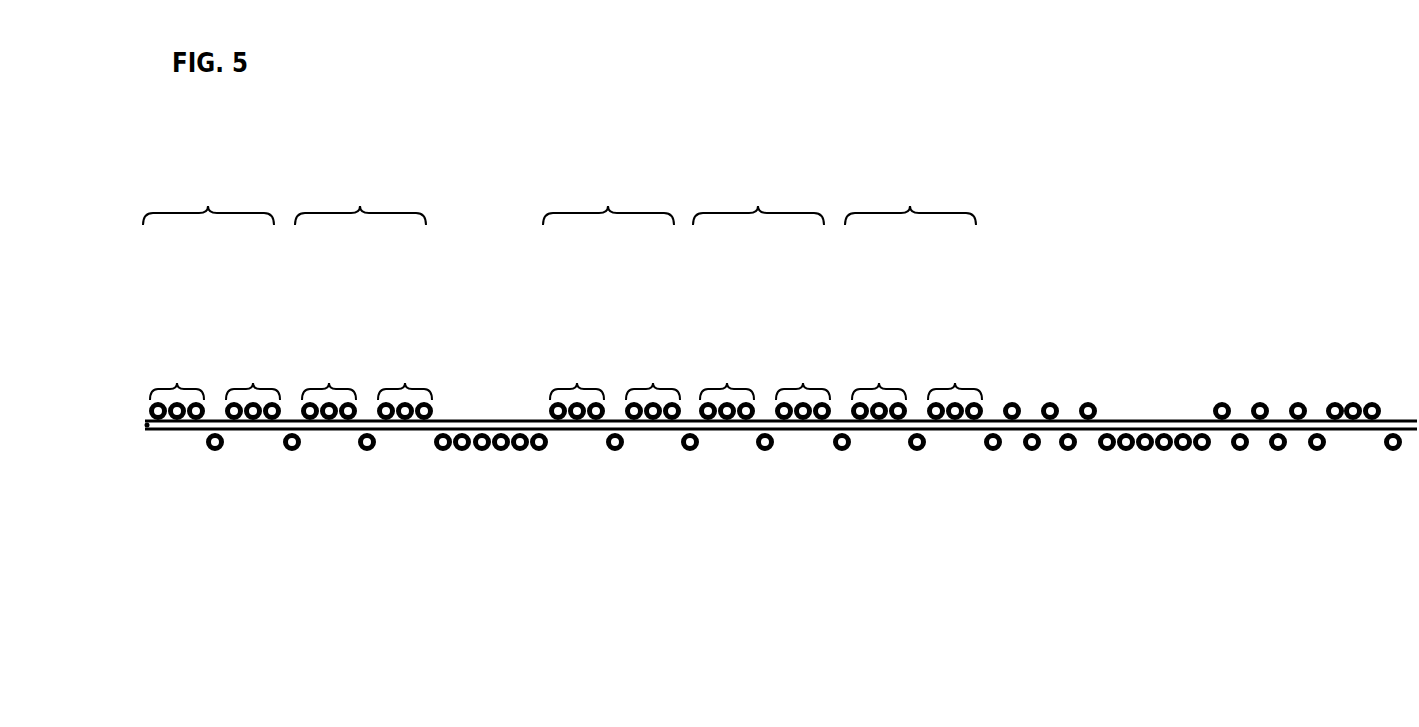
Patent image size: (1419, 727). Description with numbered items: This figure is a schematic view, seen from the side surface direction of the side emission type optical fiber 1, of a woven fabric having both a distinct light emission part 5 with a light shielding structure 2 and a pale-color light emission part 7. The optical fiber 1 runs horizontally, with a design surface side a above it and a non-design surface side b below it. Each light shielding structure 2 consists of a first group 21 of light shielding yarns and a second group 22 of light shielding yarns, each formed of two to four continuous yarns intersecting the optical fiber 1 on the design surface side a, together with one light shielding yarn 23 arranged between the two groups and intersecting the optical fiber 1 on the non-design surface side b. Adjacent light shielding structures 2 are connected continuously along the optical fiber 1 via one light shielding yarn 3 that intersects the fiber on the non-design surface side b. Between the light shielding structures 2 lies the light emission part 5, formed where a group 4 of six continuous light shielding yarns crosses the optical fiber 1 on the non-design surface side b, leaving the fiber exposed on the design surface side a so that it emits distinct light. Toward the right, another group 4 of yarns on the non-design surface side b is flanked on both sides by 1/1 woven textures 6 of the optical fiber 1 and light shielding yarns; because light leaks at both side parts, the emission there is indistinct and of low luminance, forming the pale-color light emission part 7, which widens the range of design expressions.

The side emission type optical fiber 1 is at (1360, 433).
The light shielding structure 2 is at (559, 192).
The first group of light shielding yarns 21 is at (177, 383).
The second group of light shielding yarns 22 is at (253, 383).
The light shielding yarn 23 is at (213, 434).
The light shielding yarn 3 is at (692, 450).
The group of six light shielding yarns 4 is at (433, 463).
The light emission part 5 is at (438, 375).
The 1/1 woven texture 6 is at (995, 378).
The pale-color light emission part 7 is at (1210, 378).
The design surface side a is at (1008, 260).
The non-design surface side b is at (980, 540).